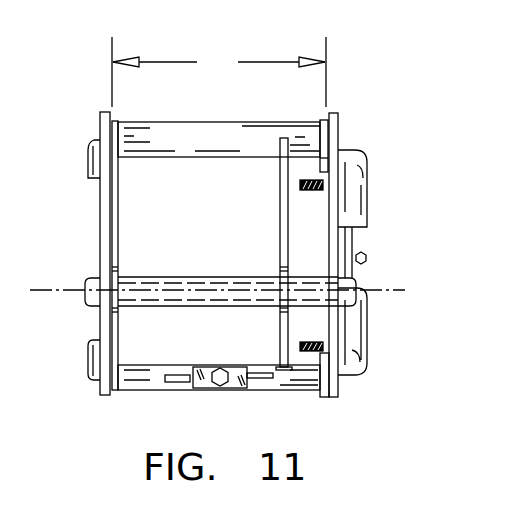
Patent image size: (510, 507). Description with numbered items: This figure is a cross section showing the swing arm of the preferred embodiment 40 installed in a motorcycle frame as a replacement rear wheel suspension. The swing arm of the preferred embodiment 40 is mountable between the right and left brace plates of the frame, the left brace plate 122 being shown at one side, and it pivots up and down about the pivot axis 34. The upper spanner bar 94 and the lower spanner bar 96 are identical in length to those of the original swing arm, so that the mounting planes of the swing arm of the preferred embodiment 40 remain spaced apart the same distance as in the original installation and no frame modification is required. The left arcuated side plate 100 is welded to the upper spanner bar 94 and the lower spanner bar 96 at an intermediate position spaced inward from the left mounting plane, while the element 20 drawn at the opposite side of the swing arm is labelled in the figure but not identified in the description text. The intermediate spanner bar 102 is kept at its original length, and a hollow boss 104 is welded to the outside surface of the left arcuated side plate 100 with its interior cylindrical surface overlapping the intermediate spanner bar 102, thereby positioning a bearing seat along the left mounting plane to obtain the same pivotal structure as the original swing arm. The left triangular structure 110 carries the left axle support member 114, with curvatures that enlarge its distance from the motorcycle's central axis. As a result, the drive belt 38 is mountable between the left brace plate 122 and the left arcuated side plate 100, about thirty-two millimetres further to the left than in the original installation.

The swing arm of the preferred embodiment 40 is at (87, 68).
The end plate 20 is at (97, 125).
The pivot axis 34 is at (60, 288).
The upper spanner bar 94 is at (210, 125).
The lower spanner bar 96 is at (148, 390).
The left arcuated side plate 100 is at (280, 238).
The intermediate spanner bar 102 is at (142, 280).
The hollow boss 104 is at (360, 335).
The left triangular structure 110 is at (372, 190).
The left axle support member 114 is at (358, 271).
The left brace plate 122 is at (340, 122).
The drive belt 38 is at (310, 190).